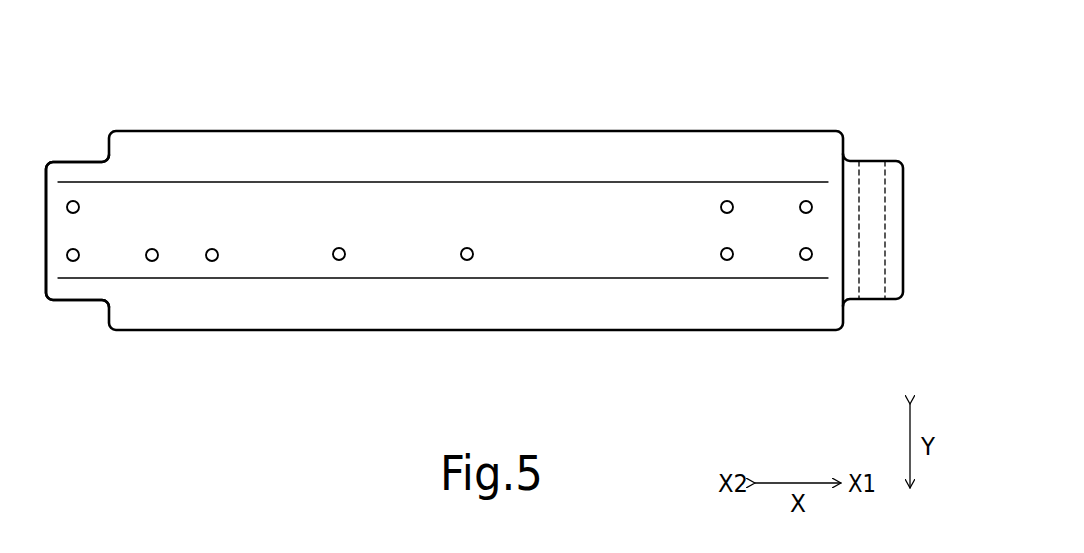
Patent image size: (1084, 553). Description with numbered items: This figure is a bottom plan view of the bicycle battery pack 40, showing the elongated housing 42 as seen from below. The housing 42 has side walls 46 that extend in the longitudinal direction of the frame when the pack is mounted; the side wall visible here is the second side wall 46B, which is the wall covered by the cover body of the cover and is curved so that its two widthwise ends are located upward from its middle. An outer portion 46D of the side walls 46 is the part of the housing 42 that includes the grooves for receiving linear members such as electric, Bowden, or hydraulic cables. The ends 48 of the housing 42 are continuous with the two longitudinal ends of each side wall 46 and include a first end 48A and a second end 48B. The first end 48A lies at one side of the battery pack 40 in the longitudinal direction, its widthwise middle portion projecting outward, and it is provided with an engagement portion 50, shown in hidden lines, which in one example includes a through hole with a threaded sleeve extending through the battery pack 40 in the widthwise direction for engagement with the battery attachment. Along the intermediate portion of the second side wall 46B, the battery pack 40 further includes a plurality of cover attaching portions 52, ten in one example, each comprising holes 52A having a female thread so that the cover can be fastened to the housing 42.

The battery pack 40 is at (503, 197).
The housing 42 is at (717, 138).
The side walls 46 is at (443, 234).
The second side wall 46B is at (510, 145).
The outer portion 46D is at (504, 313).
The ends 48 is at (503, 227).
The first end 48A is at (901, 231).
The second end 48B is at (65, 172).
The engagement portion 50 is at (886, 287).
The cover attaching portion 52 is at (439, 292).
The holes 52A is at (732, 230).